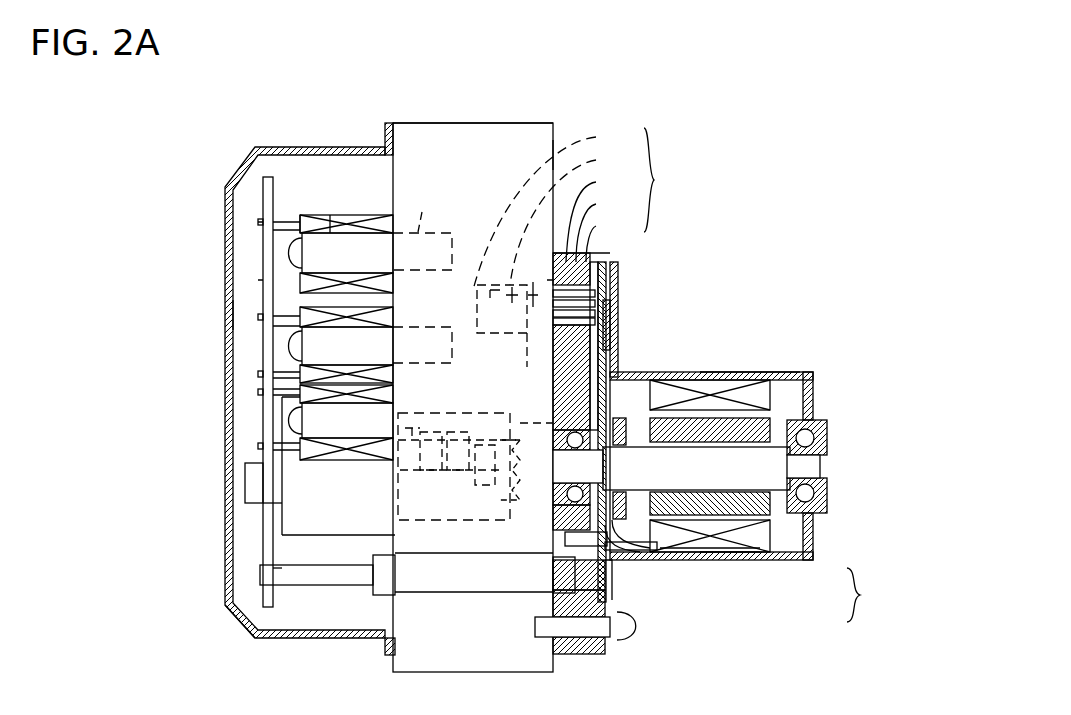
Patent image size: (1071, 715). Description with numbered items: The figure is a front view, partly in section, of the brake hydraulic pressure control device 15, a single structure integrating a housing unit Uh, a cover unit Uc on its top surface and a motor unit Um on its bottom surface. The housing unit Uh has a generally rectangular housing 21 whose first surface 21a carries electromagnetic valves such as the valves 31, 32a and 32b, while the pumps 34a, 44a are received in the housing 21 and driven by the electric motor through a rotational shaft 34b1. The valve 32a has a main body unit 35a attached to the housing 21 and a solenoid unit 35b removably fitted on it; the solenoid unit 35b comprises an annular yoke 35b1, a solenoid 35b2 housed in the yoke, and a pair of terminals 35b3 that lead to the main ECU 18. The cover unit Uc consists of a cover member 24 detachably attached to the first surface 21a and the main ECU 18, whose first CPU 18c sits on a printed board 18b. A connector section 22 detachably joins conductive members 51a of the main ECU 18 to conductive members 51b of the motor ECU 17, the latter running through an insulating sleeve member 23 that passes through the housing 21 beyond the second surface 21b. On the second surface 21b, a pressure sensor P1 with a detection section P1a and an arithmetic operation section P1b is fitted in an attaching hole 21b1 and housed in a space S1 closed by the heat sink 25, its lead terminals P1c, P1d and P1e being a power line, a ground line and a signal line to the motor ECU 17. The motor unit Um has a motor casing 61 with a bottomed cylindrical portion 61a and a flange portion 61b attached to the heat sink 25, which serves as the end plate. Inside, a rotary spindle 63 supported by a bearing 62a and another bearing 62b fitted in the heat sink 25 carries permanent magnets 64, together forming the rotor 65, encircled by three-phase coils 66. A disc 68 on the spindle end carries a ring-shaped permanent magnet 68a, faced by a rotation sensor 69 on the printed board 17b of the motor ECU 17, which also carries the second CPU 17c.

The brake hydraulic pressure control device 15 is at (680, 121).
The motor ECU 17 is at (600, 285).
The printed board 17b is at (604, 322).
The second CPU 17c is at (604, 348).
The main ECU 18 is at (262, 295).
The printed board 18b is at (272, 345).
The first CPU 18c is at (247, 474).
The housing 21 is at (447, 120).
The first surface 21a is at (388, 148).
The second surface 21b is at (553, 150).
The attaching hole 21b1 is at (507, 323).
The connector section 22 is at (386, 642).
The sleeve member 23 is at (458, 594).
The cover member 24 is at (230, 316).
The heat sink 25 is at (582, 657).
The electromagnetic valve 31 is at (401, 401).
The electromagnetic valve 32a is at (446, 231).
The electromagnetic valve 32b is at (401, 324).
The pump 34a is at (262, 532).
The rotational shaft 34b1 is at (283, 504).
The main body unit 35a is at (429, 207).
The solenoid unit 35b is at (352, 210).
The yoke 35b1 is at (312, 212).
The solenoid 35b2 is at (337, 212).
The terminals 35b3 is at (260, 222).
The pump 44a is at (260, 558).
The conductive member 51a is at (314, 583).
The conductive member 51b is at (622, 577).
The motor casing 61 is at (818, 371).
The bottomed cylindrical portion 61a is at (746, 372).
The flange portion 61b is at (608, 360).
The bearing 62a is at (813, 530).
The bearing 62b is at (556, 499).
The rotary spindle 63 is at (777, 485).
The motor drive permanent magnets 64 is at (781, 515).
The rotor 65 is at (869, 595).
The three-phase coils 66 is at (718, 552).
The disc 68 is at (650, 560).
The permanent magnet 68a is at (638, 565).
The rotation sensor 69 is at (622, 560).
The pressure sensor P1 is at (668, 180).
The detection section P1a is at (556, 206).
The arithmetic operation section P1b is at (575, 214).
The lead terminal P1c is at (602, 213).
The lead terminal P1d is at (608, 223).
The lead terminal P1e is at (613, 234).
The space S1 is at (520, 433).
The cover unit Uc is at (252, 163).
The housing unit Uh is at (478, 118).
The motor unit Um is at (868, 179).